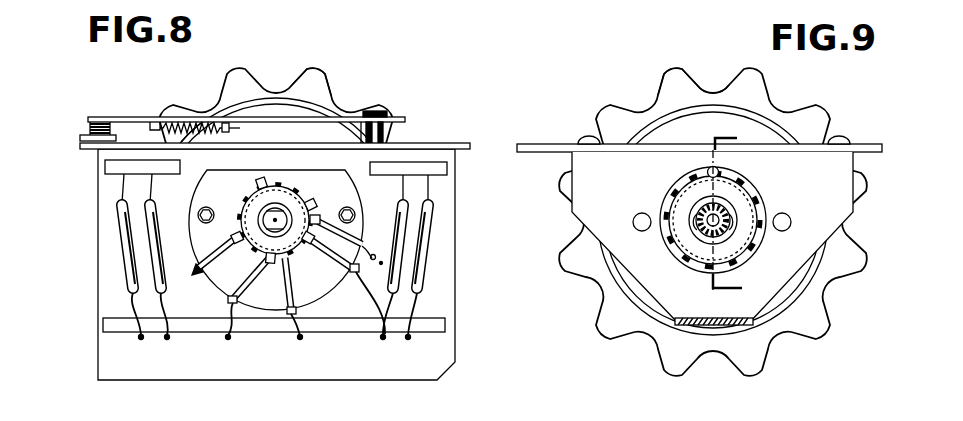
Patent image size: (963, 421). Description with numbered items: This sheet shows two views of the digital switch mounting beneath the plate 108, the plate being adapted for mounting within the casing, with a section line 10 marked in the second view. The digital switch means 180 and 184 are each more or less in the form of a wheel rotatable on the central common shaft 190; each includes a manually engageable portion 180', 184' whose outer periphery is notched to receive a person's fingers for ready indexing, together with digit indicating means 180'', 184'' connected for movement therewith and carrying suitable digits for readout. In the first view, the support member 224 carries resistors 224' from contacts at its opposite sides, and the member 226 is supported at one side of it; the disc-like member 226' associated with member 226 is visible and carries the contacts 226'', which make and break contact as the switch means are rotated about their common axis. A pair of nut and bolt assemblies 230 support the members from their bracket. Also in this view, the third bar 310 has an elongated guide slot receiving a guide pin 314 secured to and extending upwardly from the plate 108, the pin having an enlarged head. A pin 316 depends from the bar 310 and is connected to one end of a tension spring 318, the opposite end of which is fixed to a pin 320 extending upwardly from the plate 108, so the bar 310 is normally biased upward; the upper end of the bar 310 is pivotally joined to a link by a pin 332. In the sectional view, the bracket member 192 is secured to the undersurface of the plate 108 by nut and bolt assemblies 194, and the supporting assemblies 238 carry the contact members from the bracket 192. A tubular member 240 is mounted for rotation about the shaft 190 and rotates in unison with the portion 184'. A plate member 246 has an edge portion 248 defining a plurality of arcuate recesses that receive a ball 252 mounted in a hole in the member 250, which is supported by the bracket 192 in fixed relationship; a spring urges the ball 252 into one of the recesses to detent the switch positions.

In FIG. 9, the section line 10 is at (739, 215).
In FIG. 8, the plate 108 is at (458, 144).
In FIG. 9, the plate 108 is at (533, 145).
In FIG. 8, the digital switch means 180 is at (276, 208).
In FIG. 8, the manually engageable portion 180' is at (333, 63).
In FIG. 8, the digit indicating means 180'' is at (276, 190).
In FIG. 9, the digital switch means 184 is at (713, 214).
In FIG. 9, the manually engageable portion 184' is at (665, 67).
In FIG. 9, the digit indicating means 184'' is at (720, 72).
In FIG. 8, the central common shaft 190 is at (240, 298).
In FIG. 9, the central common shaft 190 is at (692, 250).
In FIG. 9, the bracket member 192 is at (855, 205).
In FIG. 9, the nut and bolt assemblies 194 is at (581, 126).
In FIG. 8, the support member 224 is at (423, 257).
In FIG. 8, the resistors 224' is at (134, 257).
In FIG. 8, the contact supporting member 226 is at (288, 258).
In FIG. 8, the disc-like member 226' is at (315, 253).
In FIG. 8, the contacts 226'' is at (343, 206).
In FIG. 8, the nut and bolt assemblies 230 is at (207, 212).
In FIG. 9, the supporting assemblies 238 is at (633, 226).
In FIG. 9, the tubular member 240 is at (742, 232).
In FIG. 9, the plate member 246 is at (708, 266).
In FIG. 9, the edge portion 248 is at (731, 251).
In FIG. 9, the member 250 is at (662, 132).
In FIG. 9, the ball 252 is at (722, 172).
In FIG. 8, the third bar 310 is at (333, 100).
In FIG. 8, the guide pin 314 is at (400, 121).
In FIG. 8, the pin 316 is at (238, 127).
In FIG. 8, the tension spring 318 is at (189, 118).
In FIG. 8, the pin 320 is at (152, 126).
In FIG. 8, the pin 332 is at (97, 116).